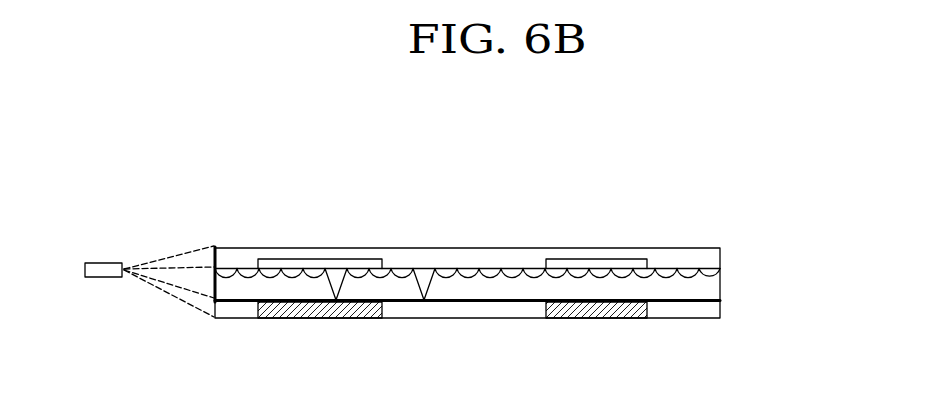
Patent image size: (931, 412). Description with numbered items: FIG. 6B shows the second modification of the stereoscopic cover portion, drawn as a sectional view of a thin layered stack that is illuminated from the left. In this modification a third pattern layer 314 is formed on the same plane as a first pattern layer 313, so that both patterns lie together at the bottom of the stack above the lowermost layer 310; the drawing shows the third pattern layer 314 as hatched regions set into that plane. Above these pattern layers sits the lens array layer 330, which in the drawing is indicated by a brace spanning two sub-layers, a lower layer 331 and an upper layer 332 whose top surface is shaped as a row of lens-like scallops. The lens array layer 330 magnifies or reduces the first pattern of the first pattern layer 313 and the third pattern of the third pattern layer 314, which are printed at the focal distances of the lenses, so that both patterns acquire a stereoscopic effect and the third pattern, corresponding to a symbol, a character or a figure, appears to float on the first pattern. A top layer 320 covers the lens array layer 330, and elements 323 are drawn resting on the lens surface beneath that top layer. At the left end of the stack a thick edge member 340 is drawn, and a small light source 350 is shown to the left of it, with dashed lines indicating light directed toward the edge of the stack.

The substrate 310 is at (505, 337).
The first pattern layer 313 is at (712, 306).
The third pattern layer 314 is at (622, 312).
The upper substrate 320 is at (712, 256).
The upper electrode 323 is at (607, 262).
The lens array layer 330 is at (540, 273).
The light guide plate 331 is at (713, 288).
The light extraction pattern 332 is at (718, 272).
The light blocking member 340 is at (214, 258).
The light source 350 is at (102, 263).